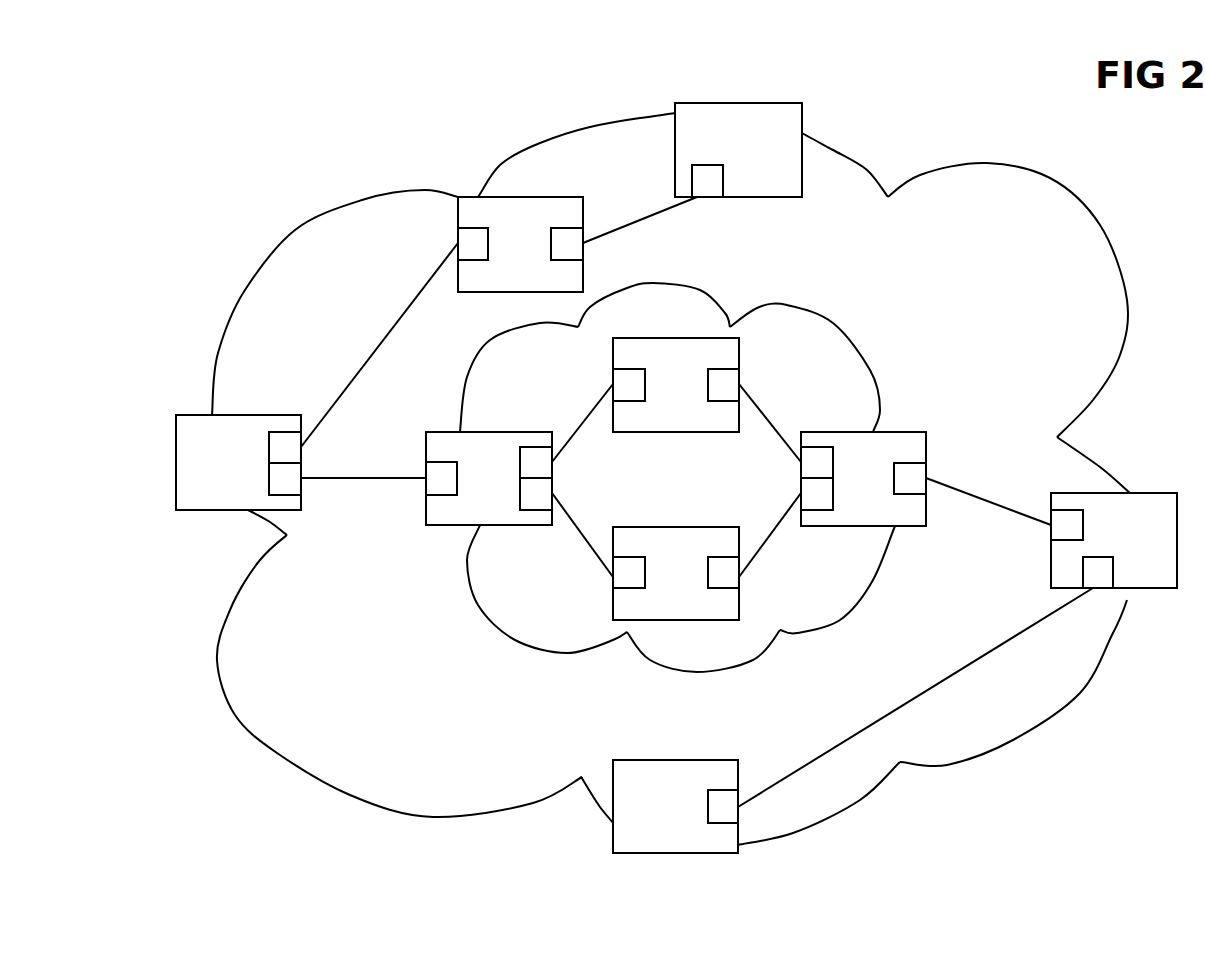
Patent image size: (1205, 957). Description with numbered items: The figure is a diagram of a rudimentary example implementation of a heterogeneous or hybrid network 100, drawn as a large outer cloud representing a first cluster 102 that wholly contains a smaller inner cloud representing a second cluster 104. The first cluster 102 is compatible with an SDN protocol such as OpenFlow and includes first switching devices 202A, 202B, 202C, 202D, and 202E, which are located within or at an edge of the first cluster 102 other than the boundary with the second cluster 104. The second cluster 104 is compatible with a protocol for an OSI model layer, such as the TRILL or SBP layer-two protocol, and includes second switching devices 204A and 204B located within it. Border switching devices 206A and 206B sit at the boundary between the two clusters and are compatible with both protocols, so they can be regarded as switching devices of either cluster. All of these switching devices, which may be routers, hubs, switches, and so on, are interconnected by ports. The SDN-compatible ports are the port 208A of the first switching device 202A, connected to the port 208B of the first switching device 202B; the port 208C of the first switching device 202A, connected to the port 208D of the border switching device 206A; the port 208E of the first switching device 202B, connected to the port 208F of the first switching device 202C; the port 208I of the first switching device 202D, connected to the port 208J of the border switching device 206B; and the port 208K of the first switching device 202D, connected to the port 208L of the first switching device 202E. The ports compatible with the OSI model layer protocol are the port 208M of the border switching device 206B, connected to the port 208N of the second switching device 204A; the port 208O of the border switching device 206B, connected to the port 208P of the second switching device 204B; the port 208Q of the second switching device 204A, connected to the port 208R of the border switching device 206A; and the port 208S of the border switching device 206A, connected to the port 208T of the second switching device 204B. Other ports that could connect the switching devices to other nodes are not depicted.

The heterogeneous or hybrid network 100 is at (252, 157).
The first cluster 102 is at (671, 479).
The second cluster 104 is at (677, 477).
The first switching device 202A is at (279, 462).
The first switching device 202B is at (521, 244).
The first switching device 202C is at (738, 172).
The first switching device 202D is at (1077, 563).
The first switching device 202E is at (715, 806).
The second switching device 204A is at (678, 385).
The second switching device 204B is at (680, 573).
The border switching device 206A is at (498, 478).
The border switching device 206B is at (861, 479).
The port 208A is at (302, 450).
The port 208B is at (458, 243).
The port 208C is at (302, 470).
The port 208D is at (426, 488).
The port 208E is at (583, 252).
The port 208F is at (707, 197).
The port 208I is at (1051, 540).
The port 208J is at (926, 472).
The port 208K is at (1100, 588).
The port 208L is at (738, 815).
The port 208M is at (801, 473).
The port 208N is at (739, 382).
The port 208O is at (801, 491).
The port 208P is at (739, 587).
The port 208Q is at (613, 382).
The port 208R is at (552, 473).
The port 208S is at (552, 491).
The port 208T is at (613, 587).